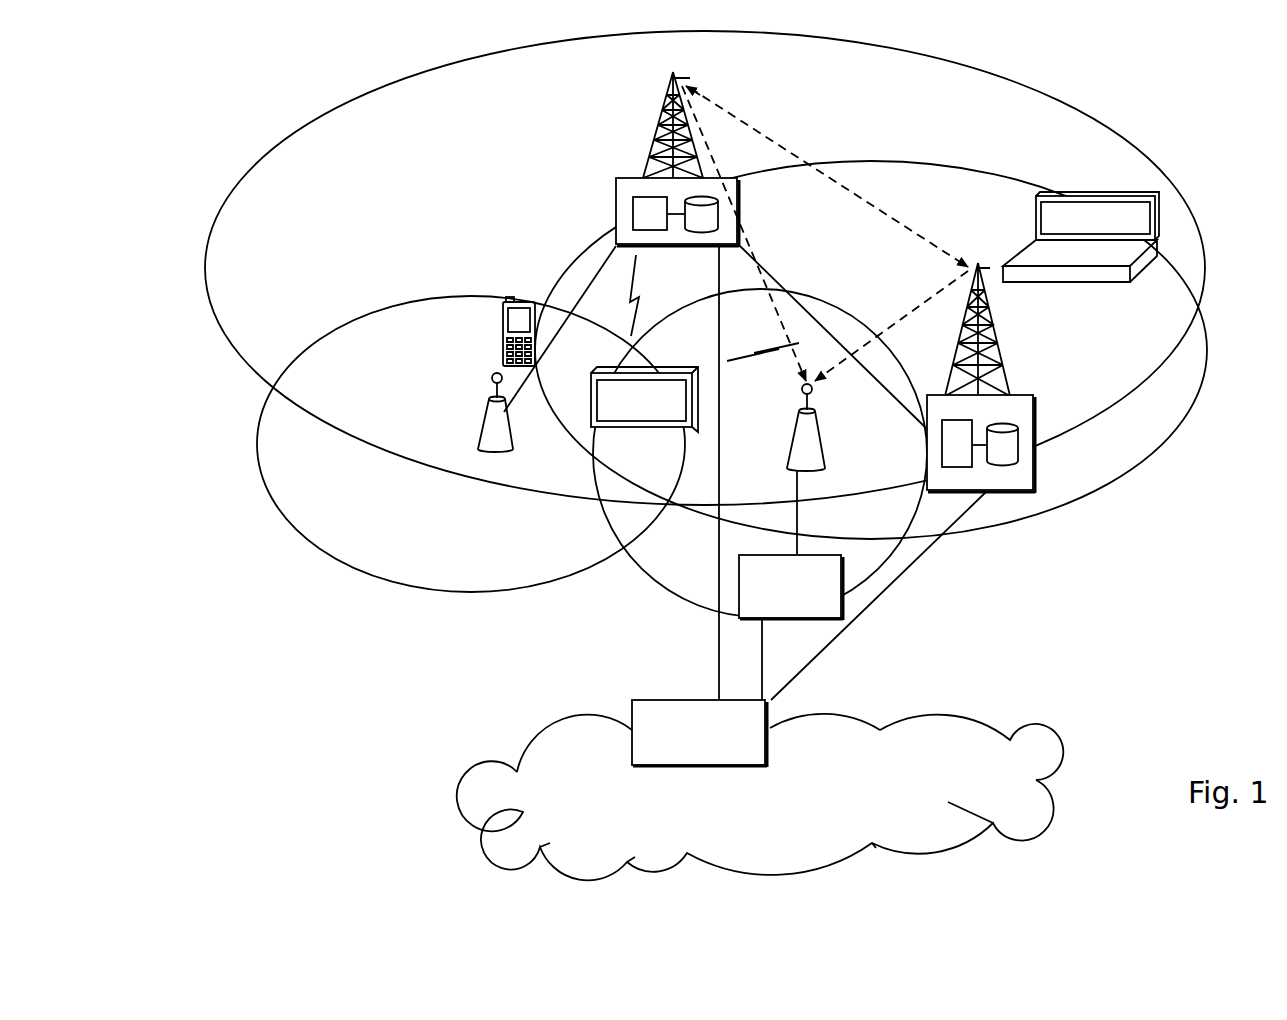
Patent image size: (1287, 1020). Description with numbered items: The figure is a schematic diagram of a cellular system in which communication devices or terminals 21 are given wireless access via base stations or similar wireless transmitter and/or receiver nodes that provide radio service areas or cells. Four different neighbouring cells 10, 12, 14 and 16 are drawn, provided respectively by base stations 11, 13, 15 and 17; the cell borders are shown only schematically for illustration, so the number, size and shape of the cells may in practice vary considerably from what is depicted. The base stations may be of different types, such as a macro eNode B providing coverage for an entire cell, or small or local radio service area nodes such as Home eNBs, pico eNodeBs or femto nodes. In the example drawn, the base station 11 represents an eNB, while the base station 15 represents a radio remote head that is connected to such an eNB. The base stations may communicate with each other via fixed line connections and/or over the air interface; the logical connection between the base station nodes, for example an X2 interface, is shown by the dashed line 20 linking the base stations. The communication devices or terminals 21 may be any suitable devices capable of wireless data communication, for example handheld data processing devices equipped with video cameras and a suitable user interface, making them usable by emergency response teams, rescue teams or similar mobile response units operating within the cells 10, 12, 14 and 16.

The cell 10 is at (290, 121).
The base station 11 is at (612, 195).
The cell 12 is at (1141, 464).
The base station 13 is at (1028, 492).
The cell 14 is at (364, 578).
The base station 15 is at (483, 410).
The cell 16 is at (632, 569).
The base station 17 is at (810, 445).
The X2 interface 20 is at (774, 140).
The communication devices or terminals 21 is at (523, 313).